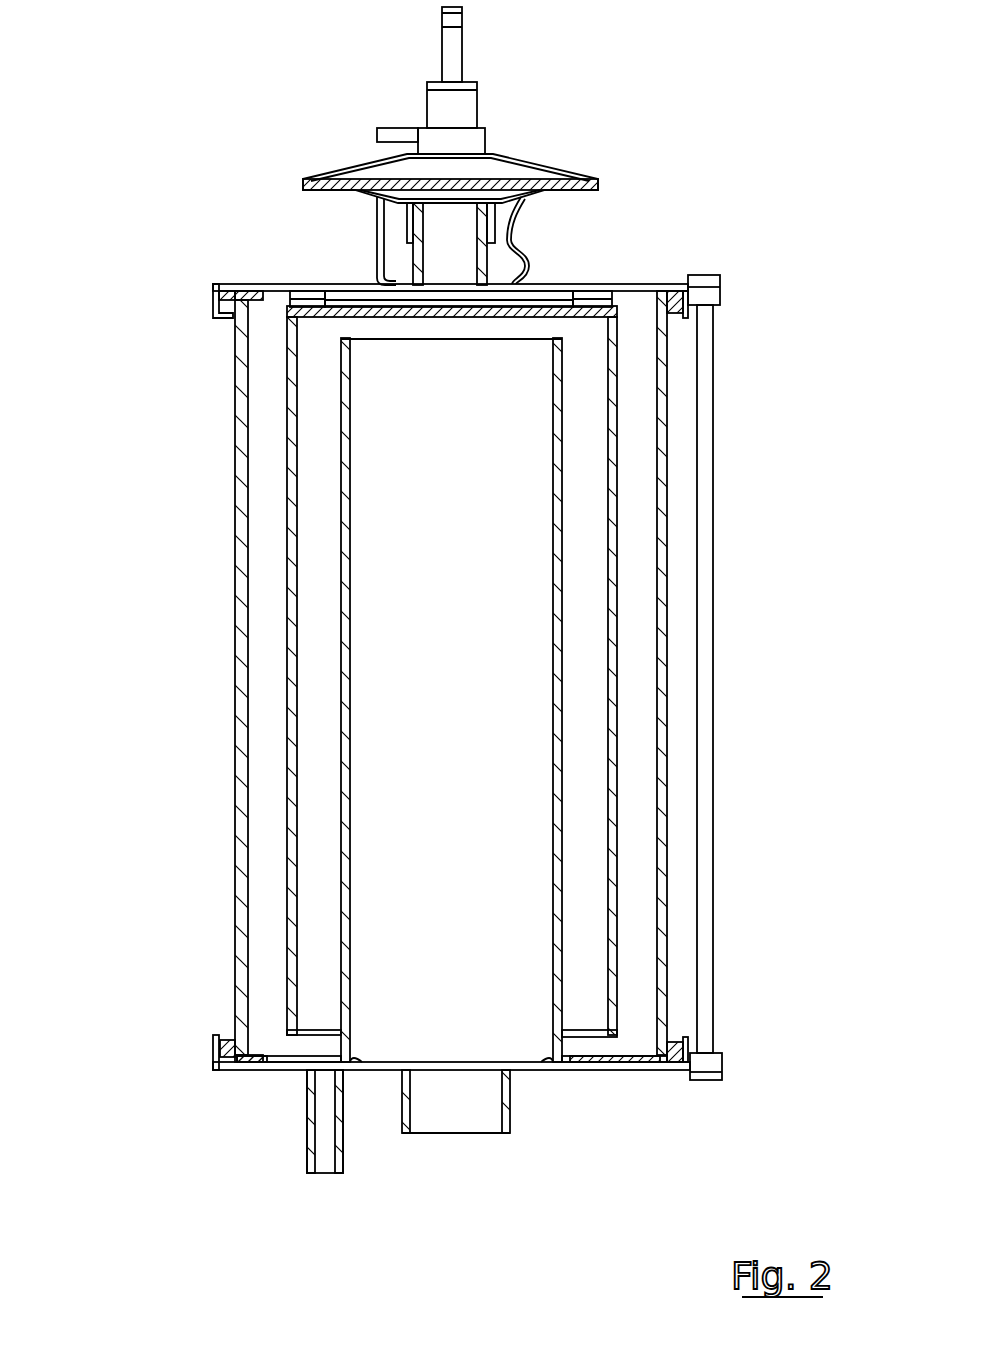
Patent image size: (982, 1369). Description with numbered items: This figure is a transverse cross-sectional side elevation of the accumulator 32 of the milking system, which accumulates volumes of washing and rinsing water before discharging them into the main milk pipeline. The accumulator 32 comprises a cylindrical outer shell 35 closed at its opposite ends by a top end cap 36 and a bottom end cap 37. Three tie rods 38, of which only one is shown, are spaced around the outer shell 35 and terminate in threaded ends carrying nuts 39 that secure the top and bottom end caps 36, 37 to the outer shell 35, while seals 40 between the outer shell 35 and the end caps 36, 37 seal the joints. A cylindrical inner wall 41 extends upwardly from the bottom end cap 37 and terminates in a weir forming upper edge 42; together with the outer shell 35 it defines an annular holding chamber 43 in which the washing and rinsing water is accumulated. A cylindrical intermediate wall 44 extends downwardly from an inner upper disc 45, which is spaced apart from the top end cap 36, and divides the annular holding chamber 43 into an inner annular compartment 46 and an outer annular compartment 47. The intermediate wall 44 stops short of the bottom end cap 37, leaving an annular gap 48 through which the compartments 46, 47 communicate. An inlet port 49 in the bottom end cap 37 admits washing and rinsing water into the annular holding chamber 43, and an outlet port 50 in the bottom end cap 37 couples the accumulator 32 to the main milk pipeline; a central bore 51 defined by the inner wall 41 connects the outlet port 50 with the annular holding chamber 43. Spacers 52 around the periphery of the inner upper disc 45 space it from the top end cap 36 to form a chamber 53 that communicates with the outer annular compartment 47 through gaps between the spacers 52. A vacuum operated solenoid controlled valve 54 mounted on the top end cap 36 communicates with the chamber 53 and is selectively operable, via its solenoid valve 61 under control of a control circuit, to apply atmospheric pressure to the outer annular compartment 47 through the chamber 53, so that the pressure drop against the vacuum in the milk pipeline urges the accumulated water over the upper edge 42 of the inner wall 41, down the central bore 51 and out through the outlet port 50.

The accumulator 32 is at (163, 1166).
The outer shell 35 is at (237, 557).
The top end cap 36 is at (350, 285).
The bottom end cap 37 is at (365, 1070).
The tie rod 38 is at (708, 989).
The nut 39 is at (705, 273).
The seal 40 is at (220, 300).
The inner wall 41 is at (341, 805).
The upper edge 42 is at (410, 340).
The annular holding chamber 43 is at (593, 895).
The intermediate wall 44 is at (617, 537).
The inner upper disc 45 is at (442, 317).
The inner annular compartment 46 is at (590, 948).
The outer annular compartment 47 is at (634, 791).
The annular gap 48 is at (602, 1048).
The inlet port 49 is at (322, 1112).
The outlet port 50 is at (470, 1105).
The central bore 51 is at (560, 672).
The spacer 52 is at (303, 295).
The chamber 53 is at (535, 302).
The vacuum operated solenoid controlled valve 54 is at (523, 160).
The solenoid valve 61 is at (470, 110).